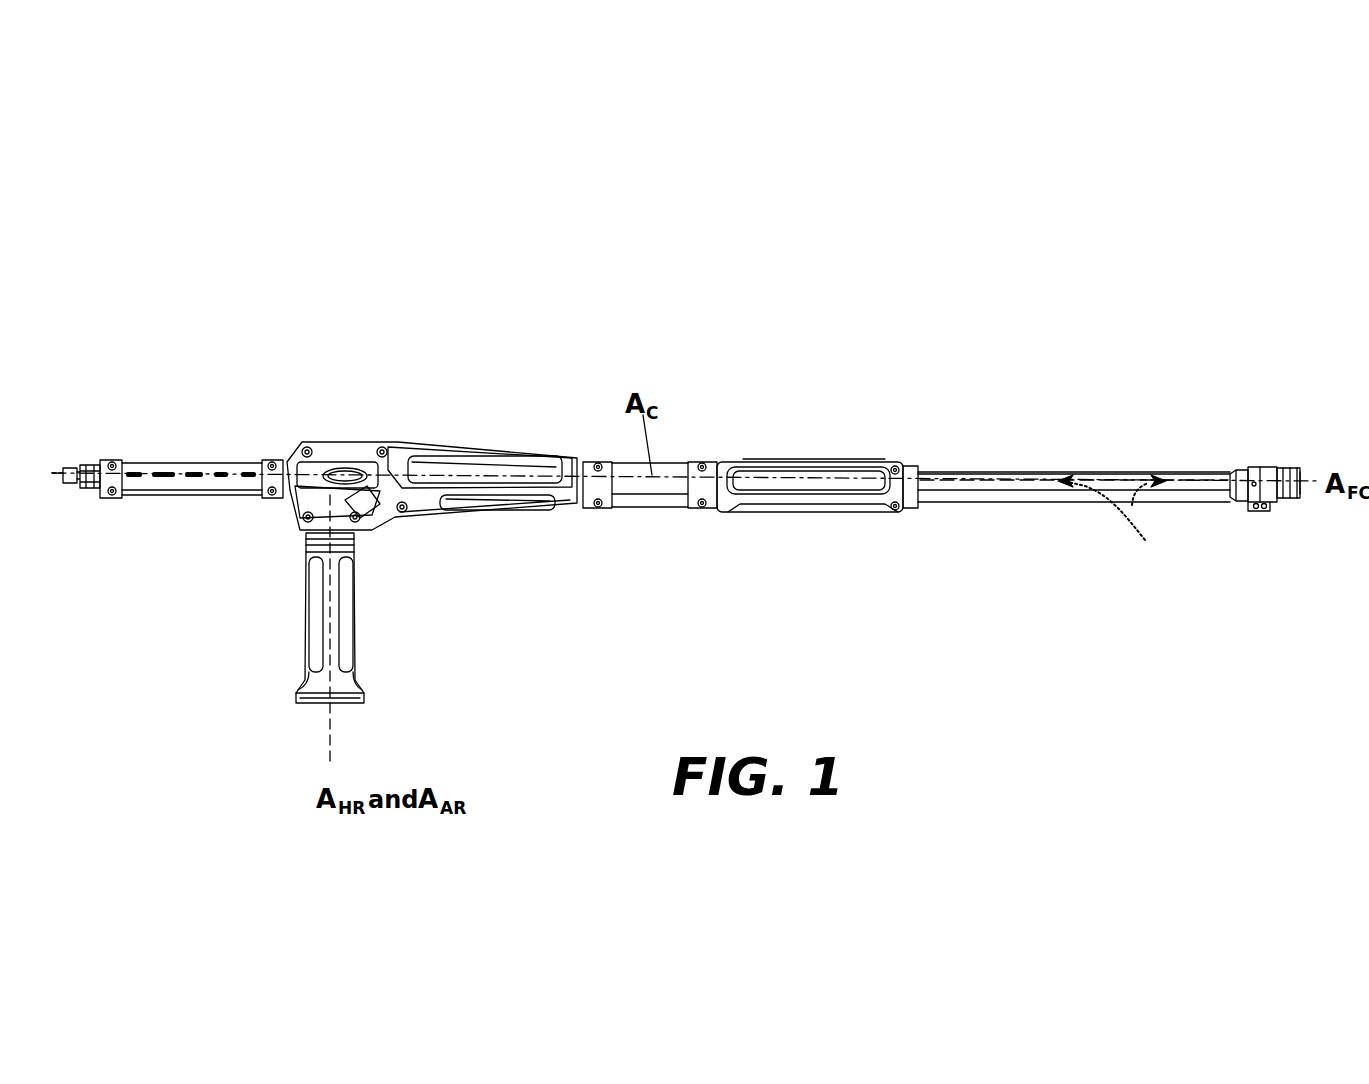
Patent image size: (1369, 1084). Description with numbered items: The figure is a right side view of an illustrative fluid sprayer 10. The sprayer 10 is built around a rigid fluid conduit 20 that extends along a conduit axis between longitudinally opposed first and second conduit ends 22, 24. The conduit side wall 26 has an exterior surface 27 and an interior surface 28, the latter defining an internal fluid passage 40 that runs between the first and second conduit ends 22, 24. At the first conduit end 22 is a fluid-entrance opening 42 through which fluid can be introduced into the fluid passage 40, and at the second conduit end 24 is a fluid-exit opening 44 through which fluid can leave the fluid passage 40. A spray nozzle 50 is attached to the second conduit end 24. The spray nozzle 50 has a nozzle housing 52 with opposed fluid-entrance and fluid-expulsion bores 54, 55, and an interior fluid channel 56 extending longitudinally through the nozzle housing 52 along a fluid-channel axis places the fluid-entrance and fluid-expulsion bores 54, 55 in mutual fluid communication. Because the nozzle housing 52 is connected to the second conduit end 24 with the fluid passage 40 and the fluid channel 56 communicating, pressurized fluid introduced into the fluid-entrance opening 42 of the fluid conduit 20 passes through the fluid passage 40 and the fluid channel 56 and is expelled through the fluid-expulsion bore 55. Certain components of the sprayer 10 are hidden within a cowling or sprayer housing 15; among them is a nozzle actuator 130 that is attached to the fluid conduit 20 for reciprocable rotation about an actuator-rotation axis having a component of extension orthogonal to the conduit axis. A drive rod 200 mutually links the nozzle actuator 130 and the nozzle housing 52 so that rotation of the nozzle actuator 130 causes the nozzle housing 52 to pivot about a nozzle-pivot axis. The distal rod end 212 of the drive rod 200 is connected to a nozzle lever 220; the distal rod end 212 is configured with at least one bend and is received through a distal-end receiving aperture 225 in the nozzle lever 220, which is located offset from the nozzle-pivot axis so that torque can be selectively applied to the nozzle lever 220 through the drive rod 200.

The sprayer 10 is at (793, 378).
The sprayer housing 15 is at (360, 442).
The fluid conduit 20 is at (1052, 473).
The first conduit end 22 is at (77, 463).
The second conduit end 24 is at (1256, 462).
The conduit side wall 26 is at (978, 475).
The exterior surface 27 is at (938, 472).
The interior surface 28 is at (1010, 480).
The fluid passage 40 is at (1116, 524).
The fluid-entrance opening 42 is at (58, 479).
The fluid-exit opening 44 is at (1265, 468).
The spray nozzle 50 is at (1297, 503).
The nozzle housing 52 is at (1300, 470).
The fluid-entrance bore 54 is at (1277, 503).
The fluid-expulsion bore 55 is at (1300, 503).
The interior fluid channel 56 is at (1293, 470).
The nozzle actuator 130 is at (377, 513).
The drive rod 200 is at (1005, 505).
The distal rod end 212 is at (1253, 510).
The nozzle lever 220 is at (1250, 507).
The distal-end receiving aperture 225 is at (1253, 508).